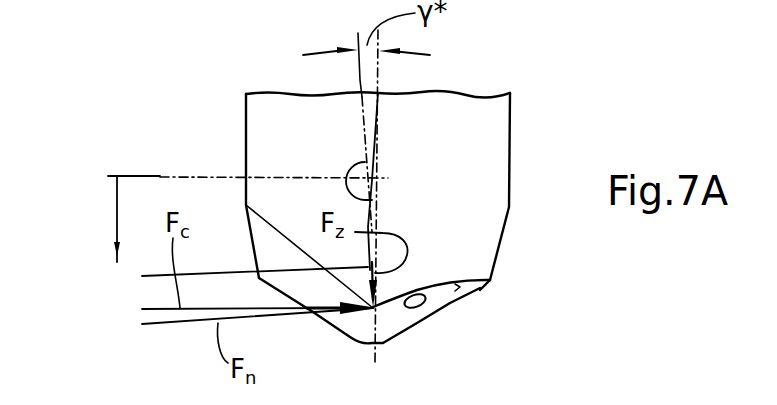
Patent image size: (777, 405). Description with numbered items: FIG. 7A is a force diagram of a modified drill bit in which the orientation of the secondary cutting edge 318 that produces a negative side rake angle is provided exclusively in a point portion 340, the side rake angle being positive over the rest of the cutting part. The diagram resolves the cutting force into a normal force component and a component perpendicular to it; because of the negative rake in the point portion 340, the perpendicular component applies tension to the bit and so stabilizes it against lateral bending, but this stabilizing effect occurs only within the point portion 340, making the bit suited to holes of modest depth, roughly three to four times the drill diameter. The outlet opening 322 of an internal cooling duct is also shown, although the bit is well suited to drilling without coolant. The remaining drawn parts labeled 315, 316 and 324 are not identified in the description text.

The cutting insert 315 is at (485, 252).
The cutter body 316 is at (297, 162).
The secondary cutting edge 318 is at (365, 162).
The outlet opening for an internal cooling duct 322 is at (420, 307).
The cutting edge lip 324 is at (460, 287).
The point portion 340 is at (117, 217).